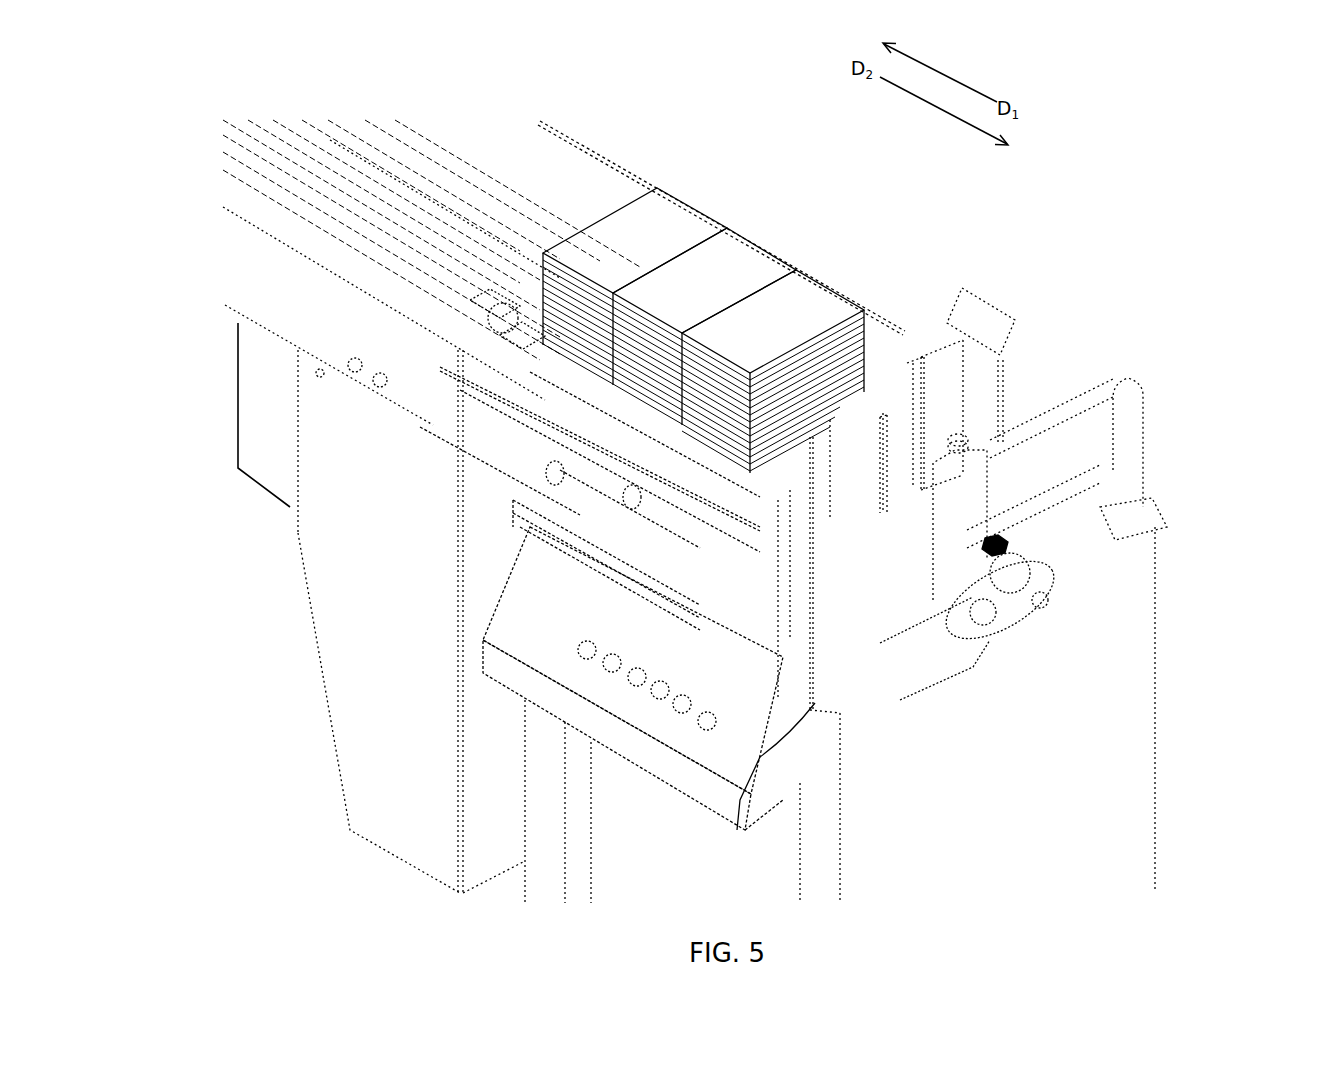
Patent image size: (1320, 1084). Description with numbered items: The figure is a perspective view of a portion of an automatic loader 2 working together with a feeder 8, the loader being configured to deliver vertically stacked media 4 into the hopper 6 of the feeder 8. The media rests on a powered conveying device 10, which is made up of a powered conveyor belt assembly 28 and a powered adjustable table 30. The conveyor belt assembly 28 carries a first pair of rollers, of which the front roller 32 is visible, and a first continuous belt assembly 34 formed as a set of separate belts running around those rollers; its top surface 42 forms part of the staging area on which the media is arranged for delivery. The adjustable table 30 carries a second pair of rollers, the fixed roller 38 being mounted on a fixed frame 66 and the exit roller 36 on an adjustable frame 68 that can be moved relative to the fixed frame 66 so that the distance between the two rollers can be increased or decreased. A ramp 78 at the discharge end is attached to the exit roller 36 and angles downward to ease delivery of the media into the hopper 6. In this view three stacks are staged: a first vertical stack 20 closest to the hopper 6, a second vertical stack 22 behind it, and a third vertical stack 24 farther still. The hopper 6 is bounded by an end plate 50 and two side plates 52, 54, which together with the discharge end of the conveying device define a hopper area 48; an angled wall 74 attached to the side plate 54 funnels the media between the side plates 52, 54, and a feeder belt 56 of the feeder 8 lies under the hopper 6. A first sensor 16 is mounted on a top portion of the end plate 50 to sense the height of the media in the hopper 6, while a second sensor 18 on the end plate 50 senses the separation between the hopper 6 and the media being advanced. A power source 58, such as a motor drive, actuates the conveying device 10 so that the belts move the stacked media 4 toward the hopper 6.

The automatic loader 2 is at (1131, 156).
The vertically stacked media 4 is at (861, 127).
The hopper 6 is at (1048, 348).
The feeder 8 is at (1107, 756).
The powered conveying device 10 is at (226, 586).
The first sensor 16 is at (920, 360).
The second sensor 18 is at (995, 548).
The first vertical stack 20 is at (803, 310).
The second vertical stack 22 is at (732, 268).
The third vertical stack 24 is at (670, 227).
The powered conveyor belt assembly 28 is at (258, 290).
The powered adjustable table 30 is at (510, 378).
The front roller 32 is at (502, 313).
The first continuous belt assembly 34 is at (510, 198).
The exit roller 36 is at (783, 490).
The fixed roller 38 is at (530, 333).
The top surface 42 is at (362, 197).
The hopper area 48 is at (898, 349).
The end plate 50 is at (953, 398).
The first side plate 52 is at (985, 357).
The second side plate 54 is at (853, 455).
The feeder belt 56 is at (970, 650).
The power source 58 is at (267, 425).
The fixed frame 66 is at (528, 437).
The adjustable frame 68 is at (680, 495).
The angled wall 74 is at (818, 472).
The ramp 78 is at (763, 538).